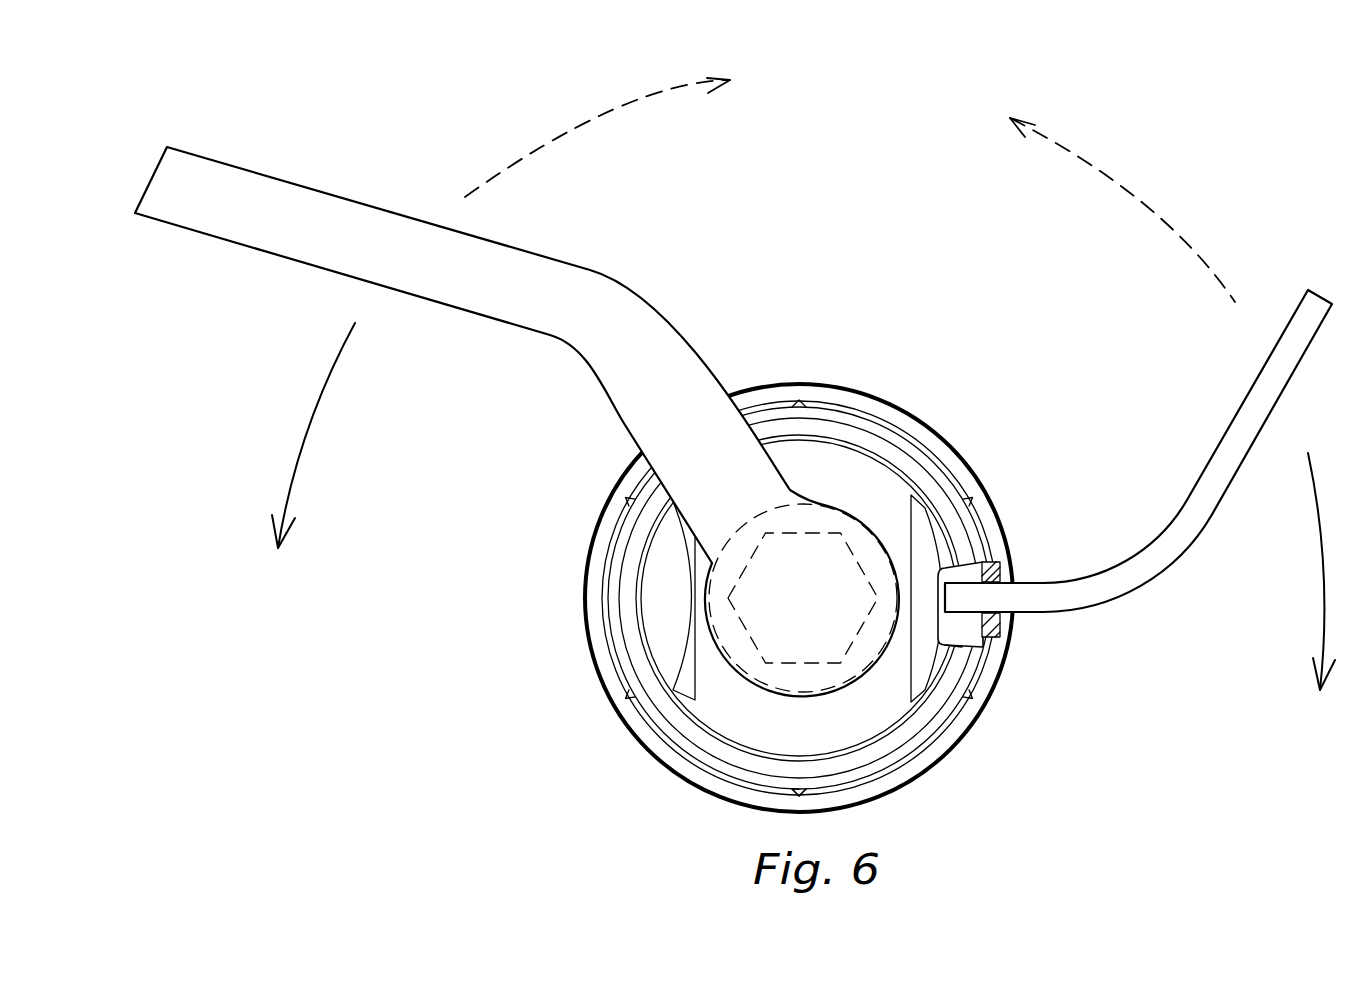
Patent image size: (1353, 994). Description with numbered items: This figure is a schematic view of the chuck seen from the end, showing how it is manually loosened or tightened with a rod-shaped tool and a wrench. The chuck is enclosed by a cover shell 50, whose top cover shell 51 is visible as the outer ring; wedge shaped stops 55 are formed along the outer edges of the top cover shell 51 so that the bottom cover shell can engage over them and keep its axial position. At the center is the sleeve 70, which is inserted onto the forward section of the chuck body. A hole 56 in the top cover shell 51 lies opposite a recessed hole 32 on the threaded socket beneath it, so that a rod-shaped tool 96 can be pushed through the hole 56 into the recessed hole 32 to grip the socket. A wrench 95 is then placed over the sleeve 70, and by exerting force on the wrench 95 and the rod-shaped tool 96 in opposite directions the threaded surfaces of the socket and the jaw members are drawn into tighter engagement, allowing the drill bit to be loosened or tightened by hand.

The cover shell 50 is at (832, 382).
The top cover shell 51 is at (885, 763).
The wedge shaped stops 55 is at (905, 432).
The hole 56 is at (990, 562).
The recessed holes 32 is at (962, 620).
The sleeve 70 is at (738, 713).
The wrench 95 is at (317, 215).
The rod-shaped tool 96 is at (1182, 532).